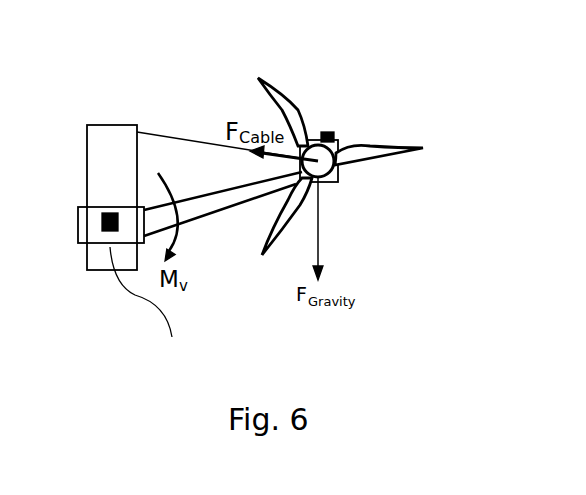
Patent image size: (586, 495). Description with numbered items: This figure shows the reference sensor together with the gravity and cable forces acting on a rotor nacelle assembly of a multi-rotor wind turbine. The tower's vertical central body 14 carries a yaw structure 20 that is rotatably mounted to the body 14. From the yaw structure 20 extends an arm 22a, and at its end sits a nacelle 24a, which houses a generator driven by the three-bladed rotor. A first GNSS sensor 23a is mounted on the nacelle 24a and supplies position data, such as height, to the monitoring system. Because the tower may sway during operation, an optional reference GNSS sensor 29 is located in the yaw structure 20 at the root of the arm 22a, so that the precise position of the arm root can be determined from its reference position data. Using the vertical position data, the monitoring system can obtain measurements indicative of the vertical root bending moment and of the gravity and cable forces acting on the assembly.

The vertical central body 14 is at (112, 145).
The yaw structure 20 is at (147, 313).
The arm 22a is at (202, 213).
The first GNSS sensor 23a is at (198, 134).
The nacelle 24a is at (340, 176).
The reference GNSS sensor 29 is at (100, 220).